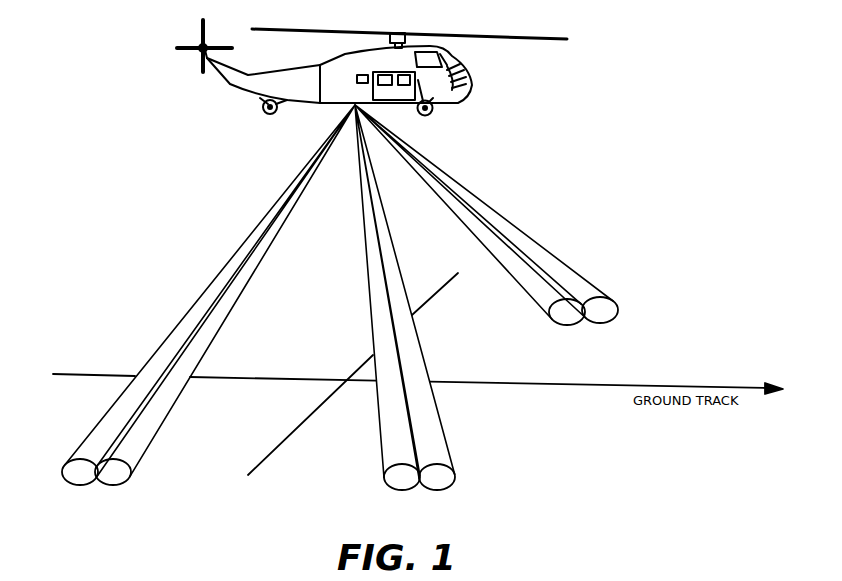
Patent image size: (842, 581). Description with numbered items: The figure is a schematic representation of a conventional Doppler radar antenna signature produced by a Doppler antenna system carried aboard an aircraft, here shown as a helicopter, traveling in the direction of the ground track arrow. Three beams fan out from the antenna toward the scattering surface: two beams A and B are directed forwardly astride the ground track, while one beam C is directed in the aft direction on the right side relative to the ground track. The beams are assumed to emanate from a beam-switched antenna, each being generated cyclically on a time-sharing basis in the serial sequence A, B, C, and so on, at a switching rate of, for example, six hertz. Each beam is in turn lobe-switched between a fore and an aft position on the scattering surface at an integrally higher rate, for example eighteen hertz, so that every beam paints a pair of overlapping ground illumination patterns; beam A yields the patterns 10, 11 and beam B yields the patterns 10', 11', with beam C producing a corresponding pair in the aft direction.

The ground illumination pattern 10 is at (609, 325).
The ground illumination pattern 11 is at (561, 326).
The ground illumination pattern 10' is at (452, 487).
The ground illumination pattern 11' is at (388, 486).
The beam A is at (555, 253).
The beam B is at (447, 443).
The beam C is at (185, 315).